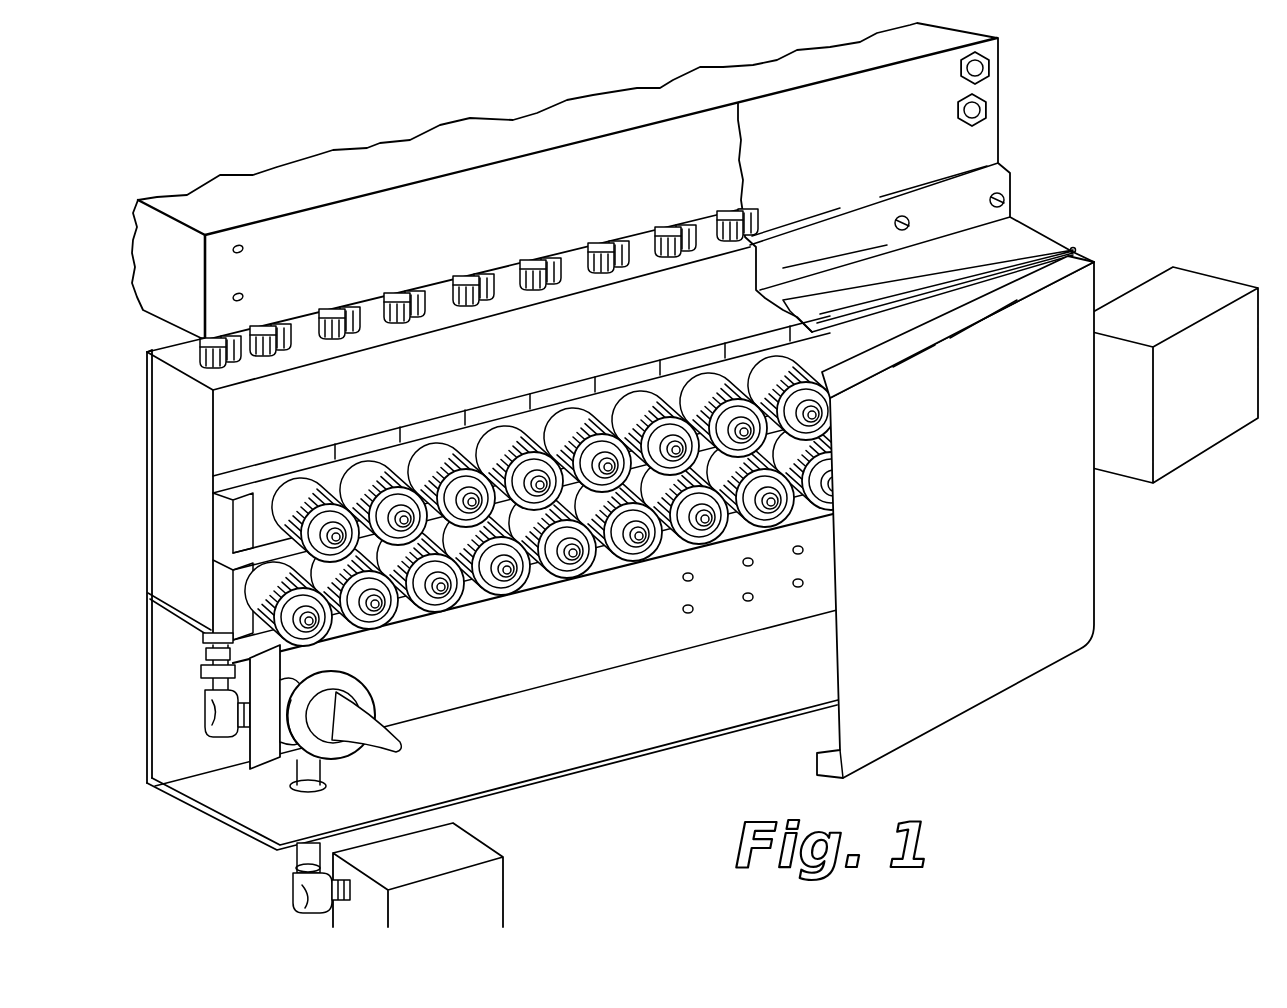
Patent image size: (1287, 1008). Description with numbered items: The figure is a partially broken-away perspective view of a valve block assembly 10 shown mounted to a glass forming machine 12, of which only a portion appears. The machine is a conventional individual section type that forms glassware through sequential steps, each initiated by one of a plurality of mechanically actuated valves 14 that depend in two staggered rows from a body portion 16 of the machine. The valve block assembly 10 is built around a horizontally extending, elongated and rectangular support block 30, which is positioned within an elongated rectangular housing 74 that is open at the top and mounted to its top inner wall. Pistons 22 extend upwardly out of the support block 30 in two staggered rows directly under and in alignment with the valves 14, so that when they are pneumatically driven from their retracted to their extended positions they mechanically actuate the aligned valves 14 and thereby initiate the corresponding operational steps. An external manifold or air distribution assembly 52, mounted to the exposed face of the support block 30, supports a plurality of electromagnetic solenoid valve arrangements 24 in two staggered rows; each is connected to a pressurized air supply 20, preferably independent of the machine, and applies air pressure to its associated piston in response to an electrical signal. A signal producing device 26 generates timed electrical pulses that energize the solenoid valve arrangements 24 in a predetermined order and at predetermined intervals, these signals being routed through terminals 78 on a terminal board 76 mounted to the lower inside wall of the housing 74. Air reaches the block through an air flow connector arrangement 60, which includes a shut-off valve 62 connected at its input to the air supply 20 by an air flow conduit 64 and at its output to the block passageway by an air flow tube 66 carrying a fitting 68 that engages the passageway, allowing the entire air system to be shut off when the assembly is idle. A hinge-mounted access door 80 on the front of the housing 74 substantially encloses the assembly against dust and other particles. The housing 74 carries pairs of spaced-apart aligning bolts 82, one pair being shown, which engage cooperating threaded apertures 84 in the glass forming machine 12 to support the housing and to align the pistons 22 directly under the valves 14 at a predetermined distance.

The valve block assembly 10 is at (109, 443).
The glass forming machine 12 is at (111, 159).
The mechanically actuated valves 14 is at (333, 312).
The body portion 16 is at (165, 262).
The pressurized air supply 20 is at (505, 875).
The pistons 22 is at (300, 343).
The electromagnetic solenoid valve arrangements 24 is at (345, 631).
The signal producing device 26 is at (1197, 273).
The support block 30 is at (167, 500).
The external manifold or air distribution assembly 52 is at (218, 522).
The air flow connector arrangement 60 is at (415, 735).
The shut-off valve 62 is at (366, 690).
The air flow conduit 64 is at (292, 880).
The air flow tube 66 is at (203, 695).
The fitting 68 is at (207, 633).
The housing 74 is at (147, 582).
The terminal board 76 is at (605, 640).
The terminals 78 is at (693, 615).
The hinge-mounted access door 80 is at (987, 683).
The aligning bolts 82 is at (990, 107).
The threaded apertures 84 is at (243, 250).